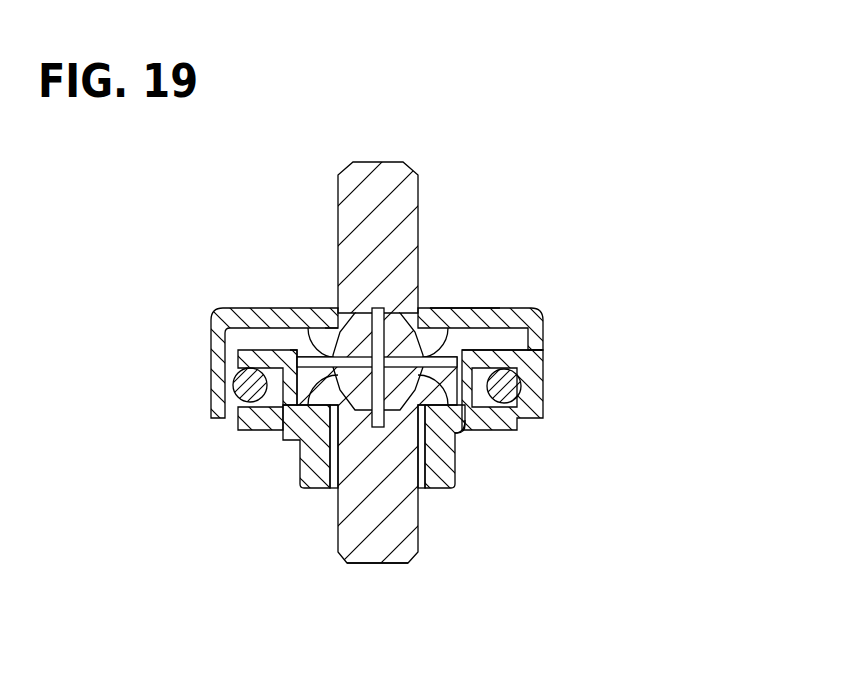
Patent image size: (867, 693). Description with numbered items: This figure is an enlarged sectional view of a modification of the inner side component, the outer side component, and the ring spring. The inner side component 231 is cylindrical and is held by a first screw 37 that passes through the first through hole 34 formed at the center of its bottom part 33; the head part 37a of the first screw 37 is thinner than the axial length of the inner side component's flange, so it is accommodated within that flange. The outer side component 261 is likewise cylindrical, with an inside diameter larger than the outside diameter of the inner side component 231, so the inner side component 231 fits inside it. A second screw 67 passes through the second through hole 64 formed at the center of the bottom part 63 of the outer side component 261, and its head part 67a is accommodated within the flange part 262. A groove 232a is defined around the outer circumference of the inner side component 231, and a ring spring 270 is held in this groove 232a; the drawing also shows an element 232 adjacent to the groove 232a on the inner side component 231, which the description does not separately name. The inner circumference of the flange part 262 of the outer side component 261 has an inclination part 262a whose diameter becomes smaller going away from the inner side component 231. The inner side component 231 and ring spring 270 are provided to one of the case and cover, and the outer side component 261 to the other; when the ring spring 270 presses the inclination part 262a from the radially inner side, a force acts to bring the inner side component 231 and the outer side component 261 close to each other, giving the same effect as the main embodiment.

The second screw 67 is at (392, 163).
The head part 67a is at (295, 342).
The second through hole 64 is at (332, 327).
The bottom part 63 is at (455, 307).
The outer side component 261 is at (515, 298).
The flange part 262 is at (545, 382).
The inclination part 262a is at (528, 353).
The ring spring 270 is at (545, 407).
The ball 232 is at (302, 402).
The groove 232a is at (262, 400).
The inner side component 231 is at (471, 464).
The bottom part 33 is at (315, 489).
The first through hole 34 is at (424, 489).
The first screw 37 is at (392, 564).
The head part 37a is at (466, 433).